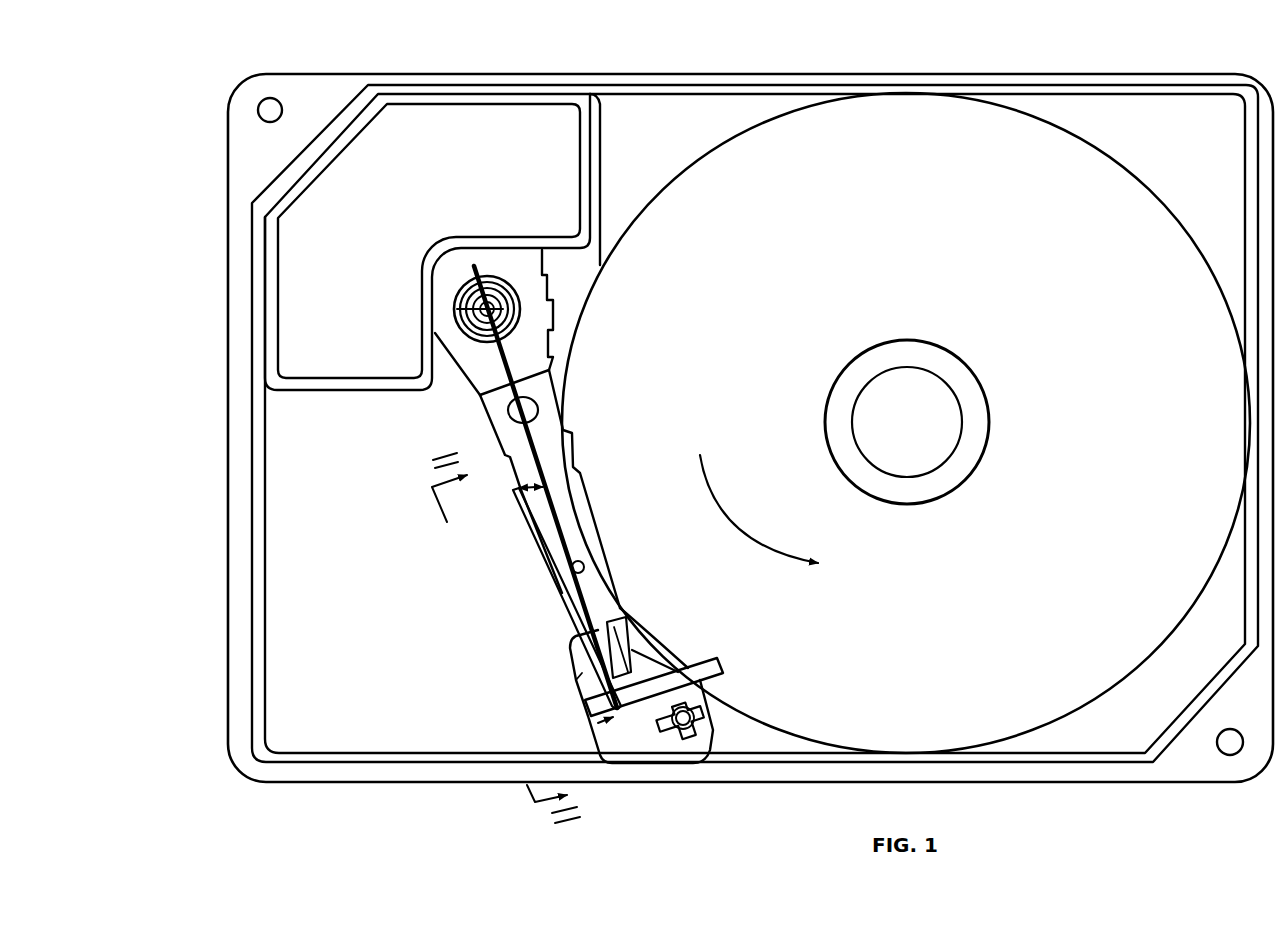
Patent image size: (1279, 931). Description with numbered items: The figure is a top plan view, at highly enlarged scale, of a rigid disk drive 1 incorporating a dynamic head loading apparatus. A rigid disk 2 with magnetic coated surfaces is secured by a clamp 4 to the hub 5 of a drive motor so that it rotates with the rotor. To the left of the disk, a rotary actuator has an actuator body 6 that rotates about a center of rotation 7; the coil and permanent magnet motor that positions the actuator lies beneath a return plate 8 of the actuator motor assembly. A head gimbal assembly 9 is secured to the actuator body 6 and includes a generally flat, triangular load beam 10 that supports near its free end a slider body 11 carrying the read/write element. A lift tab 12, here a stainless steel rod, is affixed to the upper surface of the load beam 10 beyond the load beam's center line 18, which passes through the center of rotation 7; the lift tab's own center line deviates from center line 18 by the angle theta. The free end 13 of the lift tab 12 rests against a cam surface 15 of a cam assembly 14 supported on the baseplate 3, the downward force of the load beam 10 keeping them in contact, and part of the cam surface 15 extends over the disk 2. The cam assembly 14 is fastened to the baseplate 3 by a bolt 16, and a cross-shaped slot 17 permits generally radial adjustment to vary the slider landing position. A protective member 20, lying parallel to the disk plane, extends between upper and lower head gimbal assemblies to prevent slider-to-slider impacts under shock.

The rigid disk drive 1 is at (222, 142).
The rigid disk 2 is at (825, 237).
The baseplate 3 is at (463, 72).
The clamp 4 is at (942, 370).
The hub 5 is at (913, 434).
The actuator body 6 is at (477, 378).
The center of rotation 7 is at (473, 310).
The return plate 8 is at (438, 172).
The head gimbal assembly 9 is at (558, 390).
The load beam 10 is at (583, 522).
The slider body 11 is at (632, 652).
The lift tab 12 is at (567, 593).
The free end of lift tab 13 is at (586, 710).
The cam assembly 14 is at (707, 695).
The cam surface 15 is at (598, 723).
The bolt 16 is at (676, 730).
The cross-shaped slot 17 is at (660, 727).
The center line 18 is at (640, 452).
The protective member 20 is at (582, 673).